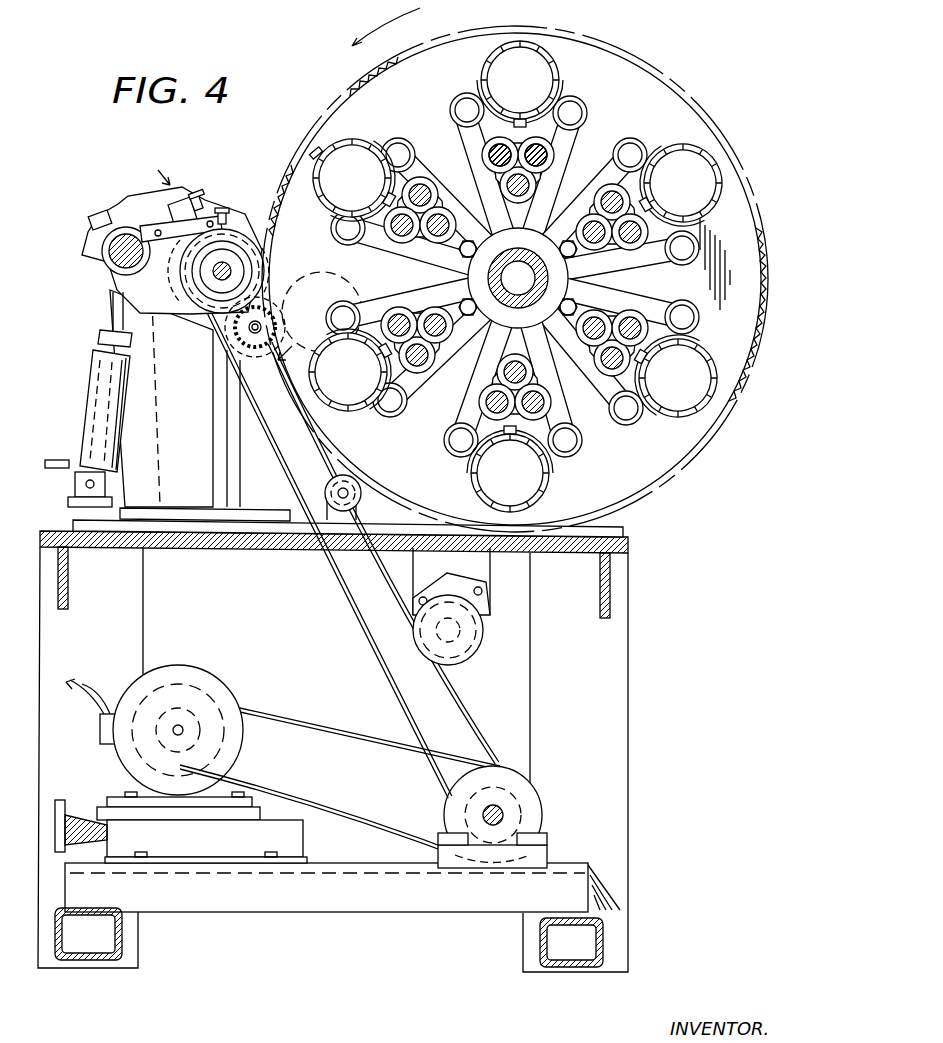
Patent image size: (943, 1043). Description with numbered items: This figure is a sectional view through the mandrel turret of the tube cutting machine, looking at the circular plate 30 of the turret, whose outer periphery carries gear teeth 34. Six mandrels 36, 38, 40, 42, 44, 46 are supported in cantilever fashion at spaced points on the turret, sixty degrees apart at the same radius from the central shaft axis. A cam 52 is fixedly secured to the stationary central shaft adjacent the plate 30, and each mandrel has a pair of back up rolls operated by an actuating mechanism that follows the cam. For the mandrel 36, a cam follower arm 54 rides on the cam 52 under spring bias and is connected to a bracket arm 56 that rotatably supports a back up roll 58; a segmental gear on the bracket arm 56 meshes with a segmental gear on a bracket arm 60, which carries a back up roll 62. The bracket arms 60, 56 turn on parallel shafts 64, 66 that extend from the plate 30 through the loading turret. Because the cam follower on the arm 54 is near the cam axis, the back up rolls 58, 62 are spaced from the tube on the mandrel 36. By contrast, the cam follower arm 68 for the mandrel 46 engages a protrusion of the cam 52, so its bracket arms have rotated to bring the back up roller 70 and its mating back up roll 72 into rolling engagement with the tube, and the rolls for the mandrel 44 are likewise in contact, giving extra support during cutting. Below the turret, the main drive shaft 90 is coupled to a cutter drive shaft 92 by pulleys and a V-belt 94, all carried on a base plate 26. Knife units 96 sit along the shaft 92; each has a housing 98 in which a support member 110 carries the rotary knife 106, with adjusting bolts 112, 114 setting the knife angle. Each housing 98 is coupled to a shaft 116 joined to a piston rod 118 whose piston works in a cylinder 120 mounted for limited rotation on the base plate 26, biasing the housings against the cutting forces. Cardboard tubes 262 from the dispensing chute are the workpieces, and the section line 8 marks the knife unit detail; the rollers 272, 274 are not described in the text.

The section line 8— 8 is at (216, 270).
The base plate 26 is at (245, 550).
The circular plate 30 is at (676, 96).
The gear teeth 34 is at (762, 280).
The mandrel 36 is at (550, 72).
The mandrel 38 is at (715, 178).
The mandrel 40 is at (712, 376).
The mandrel 42 is at (545, 470).
The mandrel 44 is at (348, 400).
The mandrel 46 is at (325, 168).
The cam 52 is at (492, 265).
The cam follower arm 54 is at (562, 210).
The bracket arm 56 is at (565, 138).
The back up roll 58 is at (578, 100).
The bracket arm 60 is at (478, 140).
The back up roll 62 is at (465, 93).
The shaft 64 is at (488, 157).
The shaft 66 is at (548, 156).
The cam follower arm 68 is at (432, 176).
The back up roller 70 is at (392, 142).
The back up roll 72 is at (333, 239).
The main drive shaft 90 is at (503, 815).
The cutter drive shaft 92 is at (218, 282).
The V-belt 94 is at (362, 618).
The knife unit 96 is at (255, 210).
The housing 98 is at (148, 300).
The rotary knife 106 is at (236, 345).
The support member 110 is at (172, 205).
The adjusting bolt 112 is at (198, 192).
The adjusting bolt 114 is at (222, 208).
The shaft 116 is at (112, 250).
The piston rod 118 is at (113, 312).
The cylinder 120 is at (84, 385).
The cardboard tubes 262 is at (318, 150).
The guide roller 272 is at (446, 425).
The guide roller 274 is at (580, 433).